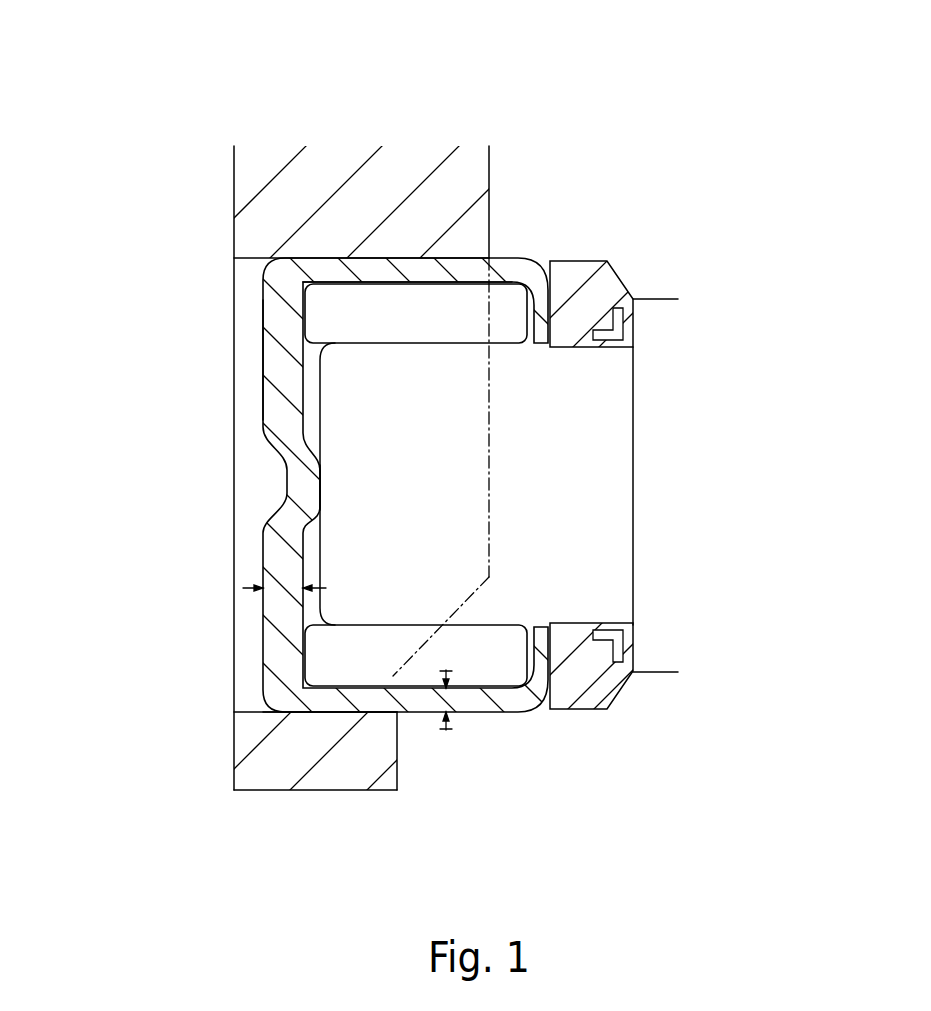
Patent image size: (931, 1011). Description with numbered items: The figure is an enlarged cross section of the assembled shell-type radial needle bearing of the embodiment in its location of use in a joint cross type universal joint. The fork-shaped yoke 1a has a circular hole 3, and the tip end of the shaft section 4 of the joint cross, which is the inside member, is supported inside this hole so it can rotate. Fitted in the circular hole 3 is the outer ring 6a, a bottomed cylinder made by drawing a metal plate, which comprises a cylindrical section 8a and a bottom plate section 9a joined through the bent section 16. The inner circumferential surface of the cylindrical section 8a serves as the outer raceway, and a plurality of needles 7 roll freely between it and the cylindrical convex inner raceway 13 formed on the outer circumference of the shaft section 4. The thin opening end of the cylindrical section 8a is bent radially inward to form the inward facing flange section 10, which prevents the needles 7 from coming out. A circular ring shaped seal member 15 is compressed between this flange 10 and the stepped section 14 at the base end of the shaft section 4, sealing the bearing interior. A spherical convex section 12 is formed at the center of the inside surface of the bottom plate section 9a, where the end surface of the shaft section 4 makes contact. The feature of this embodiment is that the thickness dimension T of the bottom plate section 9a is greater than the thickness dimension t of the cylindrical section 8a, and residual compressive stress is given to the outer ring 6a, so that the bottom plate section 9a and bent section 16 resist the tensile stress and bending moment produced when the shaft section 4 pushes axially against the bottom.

The yoke 1a is at (293, 168).
The circular hole 3 is at (258, 708).
The shaft section 4 is at (435, 395).
The outer ring 6a is at (273, 320).
The needles 7 is at (380, 307).
The cylindrical section 8a is at (418, 277).
The bottom plate section 9a is at (277, 357).
The inward facing flange section 10 is at (540, 305).
The spherical convex section 12 is at (320, 487).
The inner raceway 13 is at (452, 628).
The stepped section 14 is at (633, 554).
The seal member 15 is at (580, 670).
The bent section 16 is at (303, 706).
The thickness dimension of the bottom plate section T is at (278, 587).
The thickness dimension of the cylindrical section t is at (449, 695).